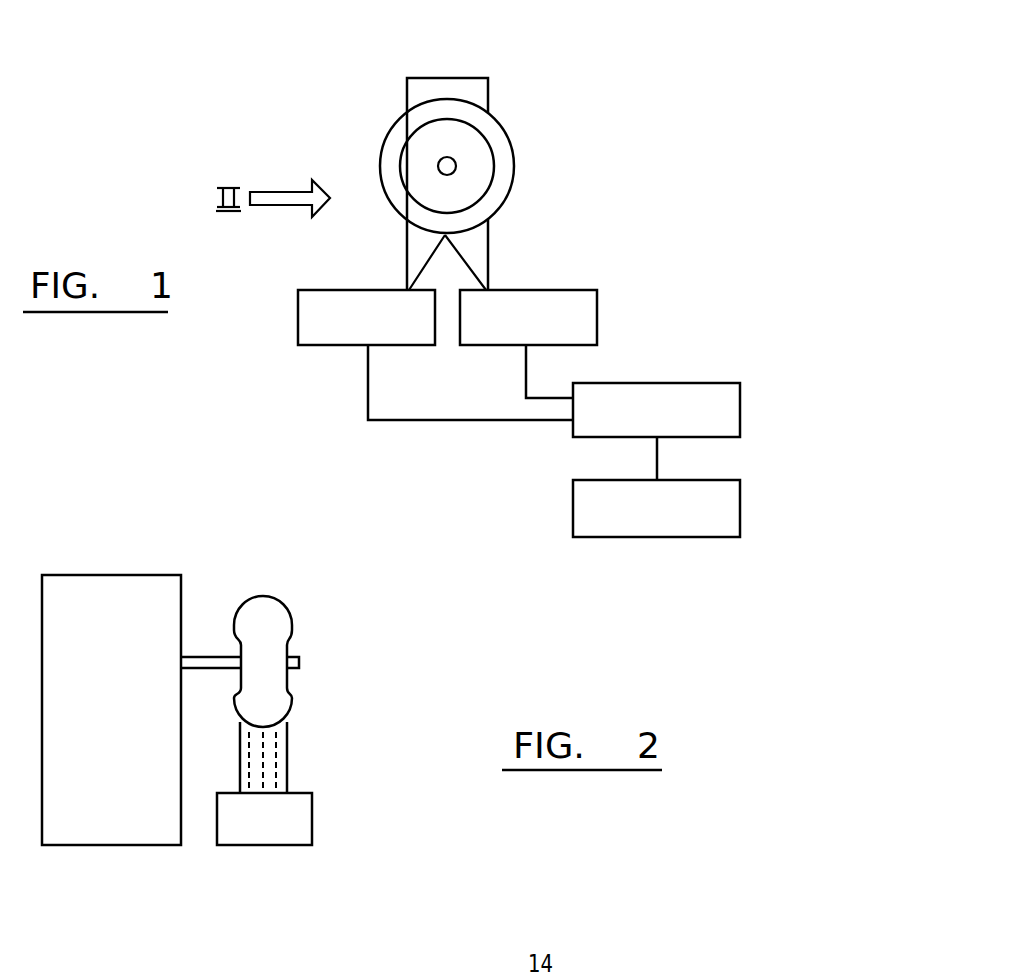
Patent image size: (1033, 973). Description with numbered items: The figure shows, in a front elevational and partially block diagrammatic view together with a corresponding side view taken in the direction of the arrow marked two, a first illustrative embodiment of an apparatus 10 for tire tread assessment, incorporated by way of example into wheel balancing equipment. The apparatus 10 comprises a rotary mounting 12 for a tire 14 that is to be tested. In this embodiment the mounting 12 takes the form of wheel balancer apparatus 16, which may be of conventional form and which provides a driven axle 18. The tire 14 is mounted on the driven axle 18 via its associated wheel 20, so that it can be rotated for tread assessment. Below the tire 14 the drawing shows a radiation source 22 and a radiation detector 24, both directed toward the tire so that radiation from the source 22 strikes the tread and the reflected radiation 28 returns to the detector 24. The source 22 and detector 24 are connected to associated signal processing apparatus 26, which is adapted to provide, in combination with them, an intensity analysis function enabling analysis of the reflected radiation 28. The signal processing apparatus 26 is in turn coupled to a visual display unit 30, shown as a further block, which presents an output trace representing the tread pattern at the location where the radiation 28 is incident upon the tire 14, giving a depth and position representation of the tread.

In FIG. 1, the apparatus for tire tread assessment 10 is at (505, 98).
In FIG. 2, the apparatus for tire tread assessment 10 is at (330, 838).
In FIG. 2, the rotary mounting 12 is at (322, 639).
In FIG. 1, the tire 14 is at (515, 150).
In FIG. 2, the tire 14 is at (290, 607).
In FIG. 1, the wheel balancer apparatus 16 is at (488, 80).
In FIG. 2, the wheel balancer apparatus 16 is at (112, 832).
In FIG. 1, the driven axle 18 is at (456, 169).
In FIG. 2, the driven axle 18 is at (206, 657).
In FIG. 1, the wheel 20 is at (495, 166).
In FIG. 2, the wheel 20 is at (287, 677).
In FIG. 1, the radiation source 22 is at (313, 345).
In FIG. 1, the radiation detector 24 is at (600, 288).
In FIG. 1, the signal processing apparatus 26 is at (703, 382).
In FIG. 1, the reflected radiation 28 is at (427, 262).
In FIG. 2, the reflected radiation 28 is at (275, 760).
In FIG. 1, the visual display unit 30 is at (717, 538).